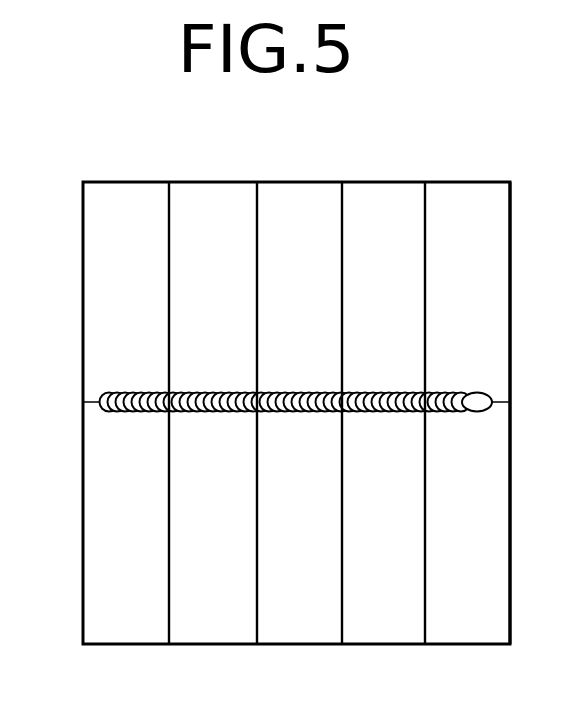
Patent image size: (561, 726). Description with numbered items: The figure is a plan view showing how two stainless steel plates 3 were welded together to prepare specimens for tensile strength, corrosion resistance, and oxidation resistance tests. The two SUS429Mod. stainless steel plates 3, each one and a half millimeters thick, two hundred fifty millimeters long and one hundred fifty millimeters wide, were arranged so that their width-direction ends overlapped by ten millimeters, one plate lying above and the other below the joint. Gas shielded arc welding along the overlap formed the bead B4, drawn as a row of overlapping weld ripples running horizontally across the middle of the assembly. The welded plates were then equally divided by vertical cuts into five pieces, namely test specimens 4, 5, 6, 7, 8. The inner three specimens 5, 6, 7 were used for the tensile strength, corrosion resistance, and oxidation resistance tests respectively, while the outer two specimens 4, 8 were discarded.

The stainless steel plate 3 is at (190, 243).
The bead B4 is at (185, 393).
The test specimen 4 is at (127, 633).
The test specimen 5 is at (219, 633).
The test specimen 6 is at (304, 633).
The test specimen 7 is at (382, 633).
The test specimen 8 is at (475, 633).